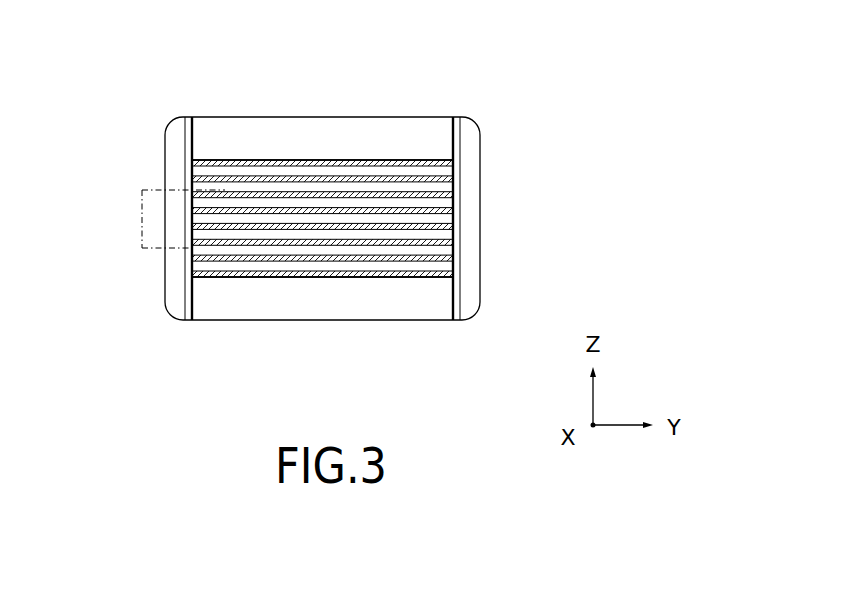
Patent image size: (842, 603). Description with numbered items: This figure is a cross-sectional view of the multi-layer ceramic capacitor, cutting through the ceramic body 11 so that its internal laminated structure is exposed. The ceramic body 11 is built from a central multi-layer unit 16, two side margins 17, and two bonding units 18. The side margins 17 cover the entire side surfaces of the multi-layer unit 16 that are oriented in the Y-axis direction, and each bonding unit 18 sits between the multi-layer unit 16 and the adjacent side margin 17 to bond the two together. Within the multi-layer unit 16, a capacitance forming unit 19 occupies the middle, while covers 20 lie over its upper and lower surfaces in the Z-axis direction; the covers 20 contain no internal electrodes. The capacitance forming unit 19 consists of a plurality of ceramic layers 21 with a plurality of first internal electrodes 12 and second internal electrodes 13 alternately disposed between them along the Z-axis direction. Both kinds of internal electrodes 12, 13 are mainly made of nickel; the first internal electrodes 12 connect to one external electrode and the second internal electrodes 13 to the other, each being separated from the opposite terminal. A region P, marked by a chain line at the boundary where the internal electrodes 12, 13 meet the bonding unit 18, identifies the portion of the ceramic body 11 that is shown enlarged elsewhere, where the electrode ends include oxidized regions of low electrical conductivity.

The ceramic body 11 is at (460, 66).
The first internal electrode 12 is at (228, 257).
The second internal electrode 13 is at (348, 273).
The multi-layer unit 16 is at (332, 96).
The side margin 17 is at (178, 297).
The bonding unit 18 is at (188, 321).
The capacitance forming unit 19 is at (322, 218).
The cover 20 is at (322, 220).
The ceramic layer 21 is at (458, 171).
The region P is at (142, 220).